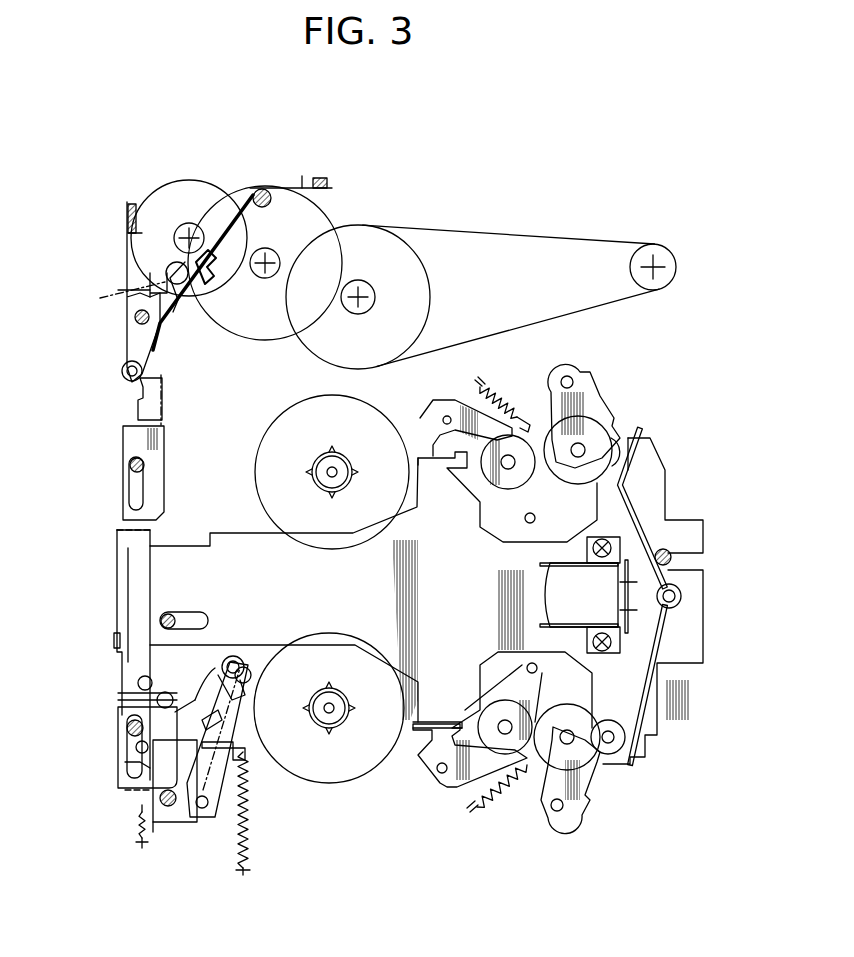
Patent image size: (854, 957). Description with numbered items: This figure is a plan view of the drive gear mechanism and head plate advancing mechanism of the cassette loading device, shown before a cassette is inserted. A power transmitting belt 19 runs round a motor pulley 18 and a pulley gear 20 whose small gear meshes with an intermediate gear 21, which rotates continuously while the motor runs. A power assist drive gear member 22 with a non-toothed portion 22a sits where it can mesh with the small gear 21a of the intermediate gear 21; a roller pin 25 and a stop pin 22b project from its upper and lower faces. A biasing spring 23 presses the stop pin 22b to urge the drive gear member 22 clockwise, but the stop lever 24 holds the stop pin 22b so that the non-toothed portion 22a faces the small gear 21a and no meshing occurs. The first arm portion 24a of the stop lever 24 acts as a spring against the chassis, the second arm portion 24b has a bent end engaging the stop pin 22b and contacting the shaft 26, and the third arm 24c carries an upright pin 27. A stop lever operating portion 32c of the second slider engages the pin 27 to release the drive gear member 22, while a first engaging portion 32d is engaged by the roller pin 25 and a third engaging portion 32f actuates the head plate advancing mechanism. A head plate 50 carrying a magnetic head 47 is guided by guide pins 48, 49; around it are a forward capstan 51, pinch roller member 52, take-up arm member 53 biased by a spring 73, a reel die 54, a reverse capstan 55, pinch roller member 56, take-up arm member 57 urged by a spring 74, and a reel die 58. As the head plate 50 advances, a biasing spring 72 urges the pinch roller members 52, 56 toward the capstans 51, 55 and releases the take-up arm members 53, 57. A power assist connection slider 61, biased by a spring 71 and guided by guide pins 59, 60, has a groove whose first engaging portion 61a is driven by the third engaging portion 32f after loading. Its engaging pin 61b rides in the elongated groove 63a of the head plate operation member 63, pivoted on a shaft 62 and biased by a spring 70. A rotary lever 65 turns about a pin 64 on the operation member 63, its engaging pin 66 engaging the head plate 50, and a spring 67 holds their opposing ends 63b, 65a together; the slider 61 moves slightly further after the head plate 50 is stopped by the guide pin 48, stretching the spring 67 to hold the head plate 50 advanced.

The motor pulley 18 is at (664, 250).
The power transmitting belt 19 is at (570, 236).
The pulley gear 20 is at (430, 302).
The intermediate gear 21 is at (333, 226).
The small gear of the intermediate gear 21a is at (260, 278).
The power assist drive gear member 22 is at (210, 188).
The non-toothed portion 22a is at (250, 190).
The stop pin 22b is at (212, 290).
The biasing spring 23 is at (302, 176).
The stop lever 24 is at (125, 340).
The first arm portion 24a is at (126, 252).
The second arm portion 24b is at (172, 306).
The third arm 24c is at (157, 376).
The roller pin 25 is at (172, 262).
The shaft 26 is at (186, 223).
The pin 27 is at (122, 378).
The stop lever operating portion 32c is at (140, 405).
The first engaging portion 32d is at (105, 297).
The third engaging portion 32f is at (113, 640).
The magnetic head 47 is at (550, 597).
The guide pin 48 is at (167, 614).
The guide pin 49 is at (667, 550).
The head plate 50 is at (684, 660).
The forward capstan 51 is at (500, 466).
The pinch roller member 52 is at (598, 402).
The take-up arm member 53 is at (433, 408).
The reel die 54 is at (314, 466).
The reverse capstan 55 is at (505, 720).
The pinch roller member 56 is at (592, 795).
The take-up arm member 57 is at (437, 785).
The reel die 58 is at (340, 722).
The guide pin 59 is at (128, 465).
The guide pin 60 is at (115, 732).
The power assist connection slider 61 is at (117, 590).
The first engaging portion 61a is at (117, 540).
The engaging pin 61b is at (118, 696).
The shaft 62 is at (150, 790).
The head plate operation member 63 is at (172, 826).
The elongated groove 63a is at (210, 668).
The opposing end 63b is at (245, 688).
The pin 64 is at (205, 820).
The rotary lever 65 is at (246, 760).
The opposing end 65a is at (224, 718).
The engaging pin 66 is at (245, 664).
The spring 67 is at (122, 762).
The spring 70 is at (250, 848).
The spring 71 is at (138, 830).
The biasing spring 72 is at (632, 490).
The spring 73 is at (500, 393).
The spring 74 is at (505, 805).